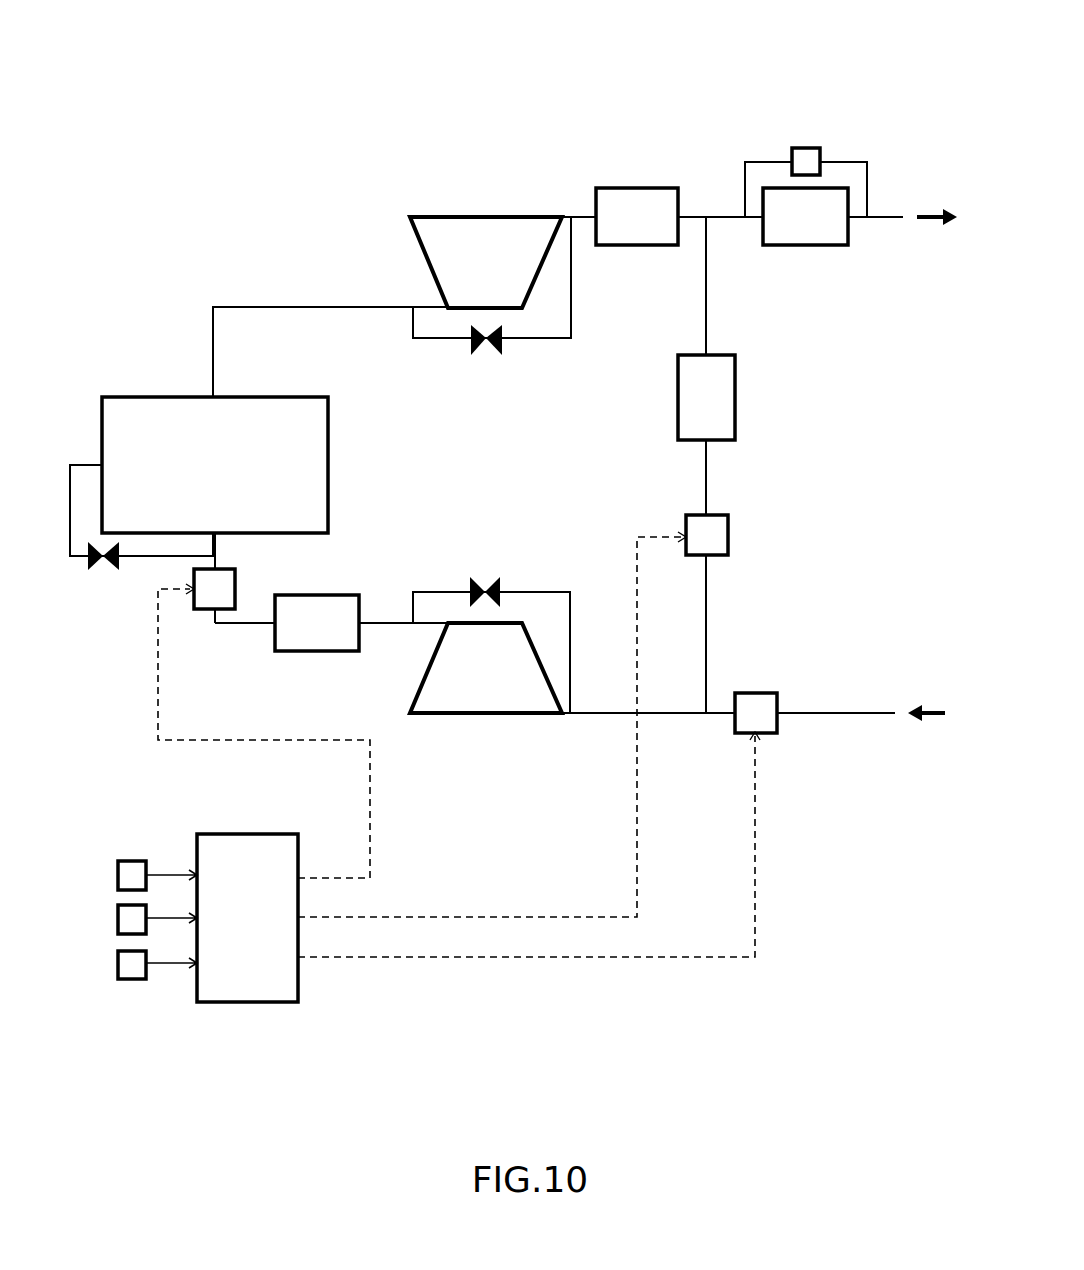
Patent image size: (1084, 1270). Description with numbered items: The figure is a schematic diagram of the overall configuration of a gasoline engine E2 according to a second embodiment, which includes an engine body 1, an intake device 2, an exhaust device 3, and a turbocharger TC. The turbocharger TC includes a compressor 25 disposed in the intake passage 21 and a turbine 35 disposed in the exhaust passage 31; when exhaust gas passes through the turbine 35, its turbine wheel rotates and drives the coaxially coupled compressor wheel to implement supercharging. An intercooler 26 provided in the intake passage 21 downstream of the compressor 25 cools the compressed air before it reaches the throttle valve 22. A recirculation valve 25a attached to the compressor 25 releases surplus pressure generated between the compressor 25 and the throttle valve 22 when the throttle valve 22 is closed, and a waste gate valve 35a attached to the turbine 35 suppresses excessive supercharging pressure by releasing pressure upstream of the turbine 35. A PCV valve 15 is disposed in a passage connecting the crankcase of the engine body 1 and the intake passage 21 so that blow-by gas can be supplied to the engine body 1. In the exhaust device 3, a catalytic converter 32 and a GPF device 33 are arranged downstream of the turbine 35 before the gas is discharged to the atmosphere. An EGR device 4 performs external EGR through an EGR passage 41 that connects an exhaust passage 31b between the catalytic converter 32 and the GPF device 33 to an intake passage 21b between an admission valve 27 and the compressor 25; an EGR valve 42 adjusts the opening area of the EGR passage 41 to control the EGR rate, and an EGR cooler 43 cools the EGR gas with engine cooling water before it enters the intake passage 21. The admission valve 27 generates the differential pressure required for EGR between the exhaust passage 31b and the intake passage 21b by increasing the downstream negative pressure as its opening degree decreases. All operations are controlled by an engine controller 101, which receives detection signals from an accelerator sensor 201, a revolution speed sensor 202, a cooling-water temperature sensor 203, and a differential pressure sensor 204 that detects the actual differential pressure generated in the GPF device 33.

The engine body 1 is at (280, 397).
The intake device 2 is at (565, 535).
The exhaust device 3 is at (620, 130).
The EGR device 4 is at (815, 435).
The PCV valve 15 is at (93, 571).
The intake passage 21 is at (238, 626).
The intake passage 21b is at (684, 707).
The throttle valve 22 is at (205, 612).
The compressor 25 is at (461, 716).
The recirculation valve 25a is at (497, 578).
The intercooler 26 is at (304, 653).
The admission valve 27 is at (763, 684).
The exhaust passage 31 is at (313, 306).
The exhaust passage 31b is at (697, 216).
The catalytic converter 32 is at (650, 188).
The GPF device 33 is at (790, 249).
The turbine 35 is at (513, 216).
The waste gate valve 35a is at (471, 354).
The EGR passage 41 is at (708, 475).
The EGR valve 42 is at (729, 537).
The EGR cooler 43 is at (736, 392).
The engine controller 101 is at (228, 1004).
The accelerator sensor 201 is at (117, 873).
The revolution speed sensor 202 is at (117, 917).
The cooling-water temperature sensor 203 is at (117, 963).
The differential pressure sensor 204 is at (808, 147).
The turbocharger TC is at (408, 170).
The gasoline engine E2 is at (738, 78).